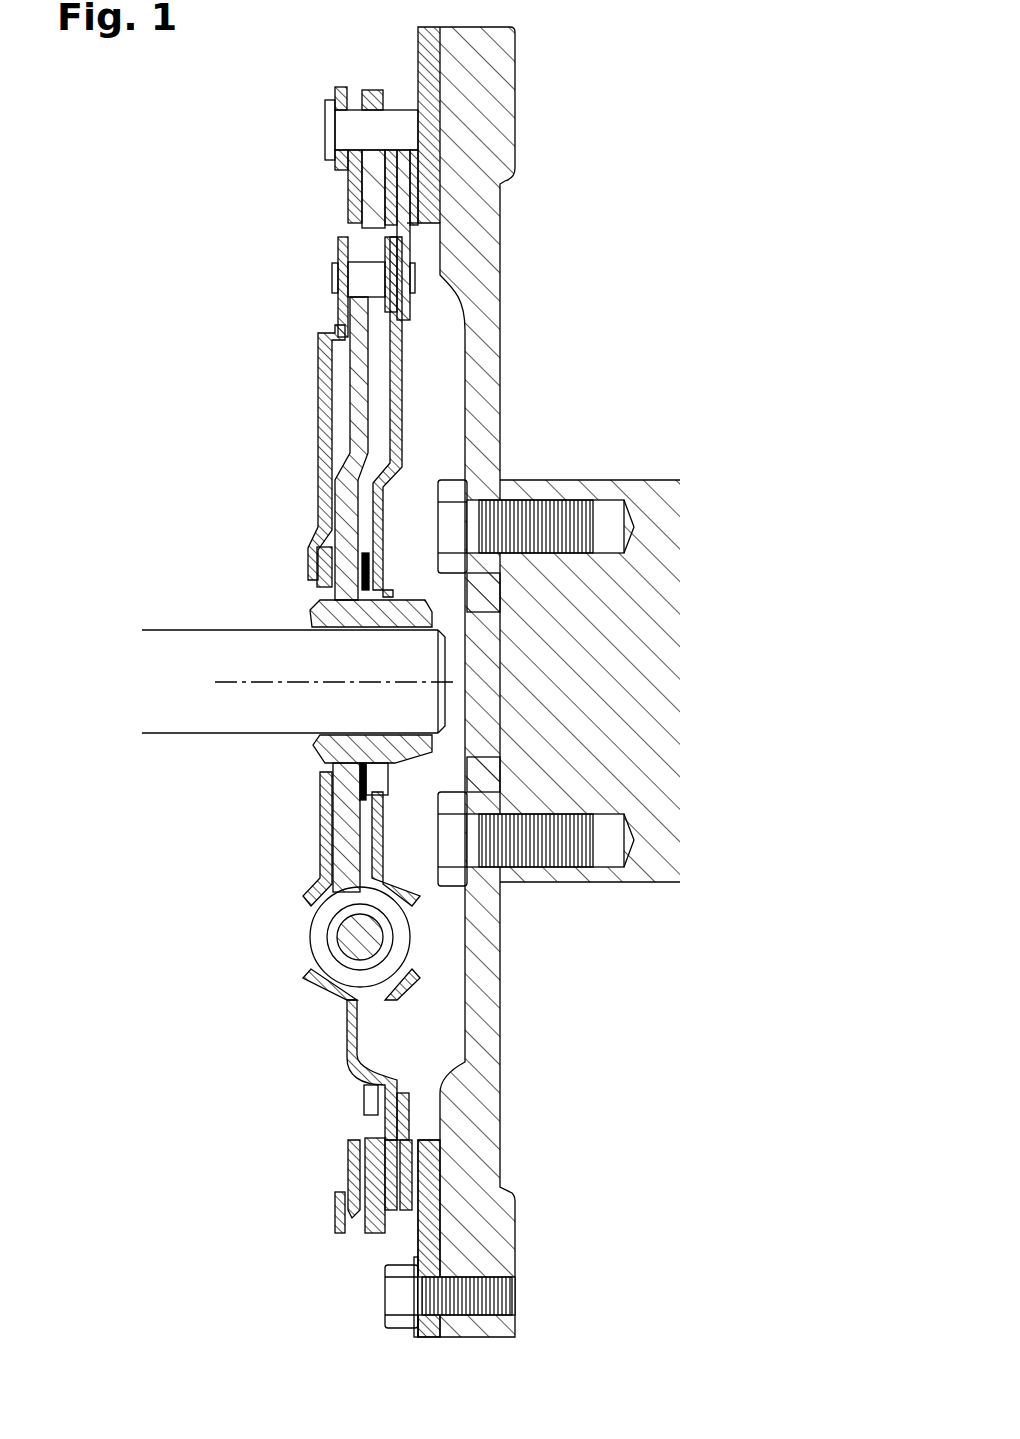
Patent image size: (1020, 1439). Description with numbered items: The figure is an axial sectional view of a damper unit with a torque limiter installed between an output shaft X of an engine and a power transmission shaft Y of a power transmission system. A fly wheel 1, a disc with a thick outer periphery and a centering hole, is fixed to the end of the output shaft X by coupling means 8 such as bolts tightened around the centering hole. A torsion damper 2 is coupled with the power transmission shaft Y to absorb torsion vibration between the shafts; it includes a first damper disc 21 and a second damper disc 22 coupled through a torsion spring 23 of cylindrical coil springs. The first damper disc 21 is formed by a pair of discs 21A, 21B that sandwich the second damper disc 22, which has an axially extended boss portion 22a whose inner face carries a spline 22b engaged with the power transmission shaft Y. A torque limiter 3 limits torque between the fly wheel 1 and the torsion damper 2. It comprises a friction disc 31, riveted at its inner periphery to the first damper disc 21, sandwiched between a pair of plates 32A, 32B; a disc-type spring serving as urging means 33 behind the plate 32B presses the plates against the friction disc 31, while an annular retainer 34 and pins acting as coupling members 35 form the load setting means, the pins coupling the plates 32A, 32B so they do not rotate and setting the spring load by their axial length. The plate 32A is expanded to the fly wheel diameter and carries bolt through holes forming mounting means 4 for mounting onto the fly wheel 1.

The fly wheel 1 is at (500, 318).
The torsion damper 2 is at (297, 948).
The torque limiter 3 is at (335, 190).
The mounting means 4 is at (388, 1297).
The coupling means 8 is at (442, 566).
The first damper disc 21 is at (345, 1048).
The disc 21A is at (413, 413).
The disc 21B is at (320, 410).
The second damper disc 22 is at (343, 825).
The boss portion 22a is at (318, 748).
The spline 22b is at (348, 735).
The torsion spring 23 is at (320, 928).
The friction disc 31 is at (415, 1075).
The plate 32A is at (437, 1170).
The plate 32B is at (372, 1232).
The urging means 33 is at (350, 1168).
The retainer 34 is at (337, 1218).
The coupling member 35 is at (398, 118).
The output shaft X is at (625, 480).
The power transmission shaft Y is at (237, 630).